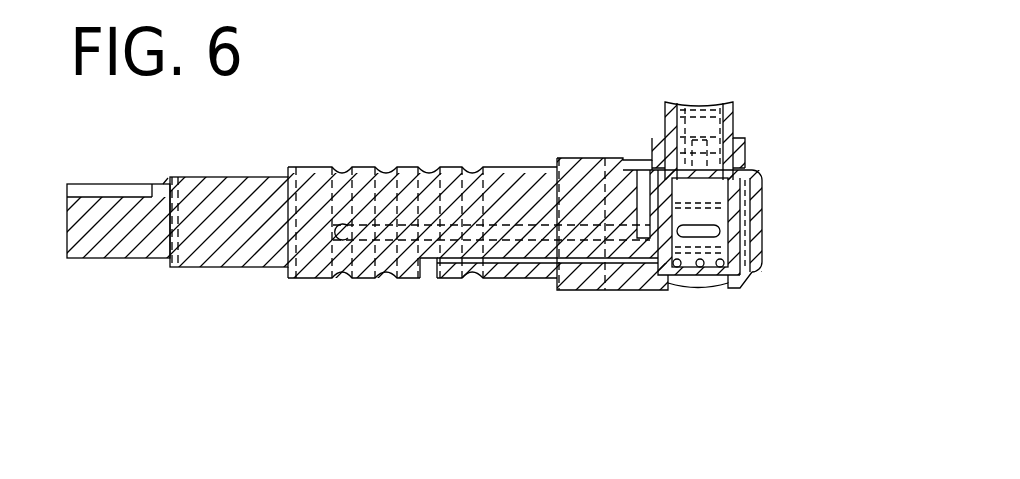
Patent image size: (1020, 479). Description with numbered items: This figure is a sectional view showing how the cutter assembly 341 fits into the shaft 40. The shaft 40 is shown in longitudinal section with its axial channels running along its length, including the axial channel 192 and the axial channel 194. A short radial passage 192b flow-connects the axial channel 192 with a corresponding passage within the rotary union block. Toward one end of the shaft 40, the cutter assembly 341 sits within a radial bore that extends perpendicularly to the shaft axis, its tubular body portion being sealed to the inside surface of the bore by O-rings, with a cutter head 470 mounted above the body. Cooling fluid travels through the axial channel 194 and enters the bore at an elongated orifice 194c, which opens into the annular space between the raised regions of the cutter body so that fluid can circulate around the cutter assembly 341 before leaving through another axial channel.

The shaft 40 is at (310, 167).
The axial channel 194 is at (500, 167).
The axial channel 192 is at (508, 263).
The radial passage 192b is at (428, 280).
The cutter head 470 is at (667, 100).
The cutter assembly 341 is at (722, 90).
The elongated orifice 194c is at (718, 232).